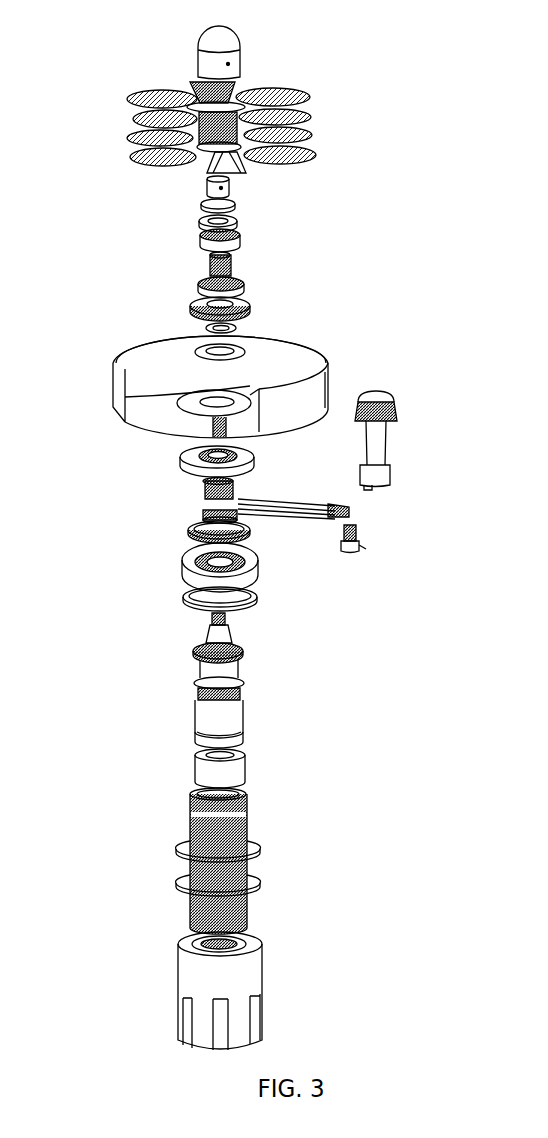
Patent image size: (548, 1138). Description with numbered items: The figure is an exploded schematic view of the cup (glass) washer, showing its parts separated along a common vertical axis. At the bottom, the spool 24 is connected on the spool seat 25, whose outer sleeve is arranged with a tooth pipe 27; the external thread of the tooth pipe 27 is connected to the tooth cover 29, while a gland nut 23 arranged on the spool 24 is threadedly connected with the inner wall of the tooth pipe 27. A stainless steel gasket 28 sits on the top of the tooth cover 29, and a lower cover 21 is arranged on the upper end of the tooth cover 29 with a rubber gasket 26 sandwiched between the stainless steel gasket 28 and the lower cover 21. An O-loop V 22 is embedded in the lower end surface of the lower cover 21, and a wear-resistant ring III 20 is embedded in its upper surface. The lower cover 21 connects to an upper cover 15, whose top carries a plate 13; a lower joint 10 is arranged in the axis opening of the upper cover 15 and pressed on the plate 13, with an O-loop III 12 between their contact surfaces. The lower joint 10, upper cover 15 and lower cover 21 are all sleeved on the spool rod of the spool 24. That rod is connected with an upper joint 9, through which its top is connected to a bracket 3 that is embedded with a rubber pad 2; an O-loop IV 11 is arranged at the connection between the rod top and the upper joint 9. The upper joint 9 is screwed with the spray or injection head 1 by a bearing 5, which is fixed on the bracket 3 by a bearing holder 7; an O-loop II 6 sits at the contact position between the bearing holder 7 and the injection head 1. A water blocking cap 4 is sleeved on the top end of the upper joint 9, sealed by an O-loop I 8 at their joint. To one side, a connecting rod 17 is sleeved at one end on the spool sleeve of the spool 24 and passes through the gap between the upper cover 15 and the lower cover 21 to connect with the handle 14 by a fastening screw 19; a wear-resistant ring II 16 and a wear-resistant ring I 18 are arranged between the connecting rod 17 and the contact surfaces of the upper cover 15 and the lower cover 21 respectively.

The injection head 1 is at (243, 48).
The rubber pad 2 is at (311, 98).
The bracket 3 is at (316, 152).
The water blocking cap 4 is at (204, 190).
The bearing 5 is at (200, 207).
The O-loop II 6 is at (198, 225).
The bearing holder 7 is at (200, 244).
The O-loop I 8 is at (201, 267).
The upper joint 9 is at (241, 283).
The lower joint 10 is at (251, 305).
The O-loop IV 11 is at (233, 331).
The O-loop III 12 is at (251, 346).
The plate 13 is at (330, 367).
The handle 14 is at (396, 399).
The upper cover 15 is at (253, 450).
The wear-resistant ring II 16 is at (236, 483).
The connecting rod 17 is at (351, 510).
The wear-resistant ring I 18 is at (239, 517).
The fastening screw 19 is at (360, 548).
The wear-resistant ring III 20 is at (249, 528).
The lower cover 21 is at (257, 583).
The O-loop V 22 is at (257, 608).
The gland nut 23 is at (245, 661).
The spool 24 is at (240, 709).
The spool seat 25 is at (247, 773).
The rubber gasket 26 is at (262, 845).
The tooth pipe 27 is at (250, 869).
The stainless steel gasket 28 is at (262, 887).
The tooth cover 29 is at (262, 981).